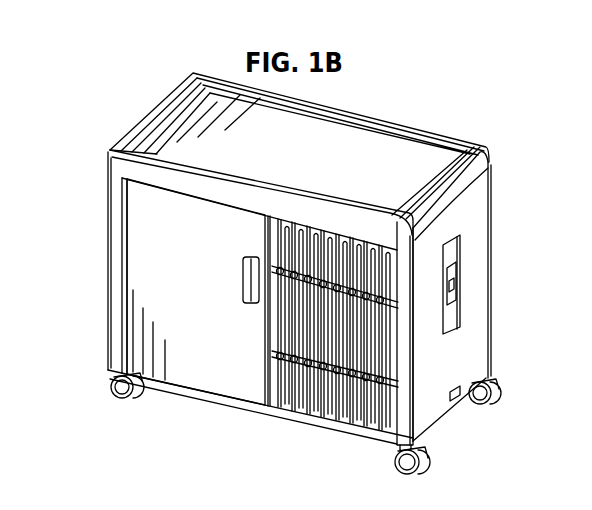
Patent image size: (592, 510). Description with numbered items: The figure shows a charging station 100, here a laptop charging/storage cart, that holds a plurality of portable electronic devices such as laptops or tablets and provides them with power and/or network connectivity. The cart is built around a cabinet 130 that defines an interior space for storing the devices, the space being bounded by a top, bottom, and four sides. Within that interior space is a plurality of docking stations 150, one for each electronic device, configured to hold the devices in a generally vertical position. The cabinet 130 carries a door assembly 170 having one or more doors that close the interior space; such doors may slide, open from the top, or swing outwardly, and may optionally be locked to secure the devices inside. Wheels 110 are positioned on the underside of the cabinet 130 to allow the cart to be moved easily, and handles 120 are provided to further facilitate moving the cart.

The charging station 100 is at (447, 104).
The wheels 110 is at (498, 398).
The handles 120 is at (165, 98).
The cabinet 130 is at (492, 250).
The docking station 150 is at (383, 367).
The door assembly 170 is at (143, 267).